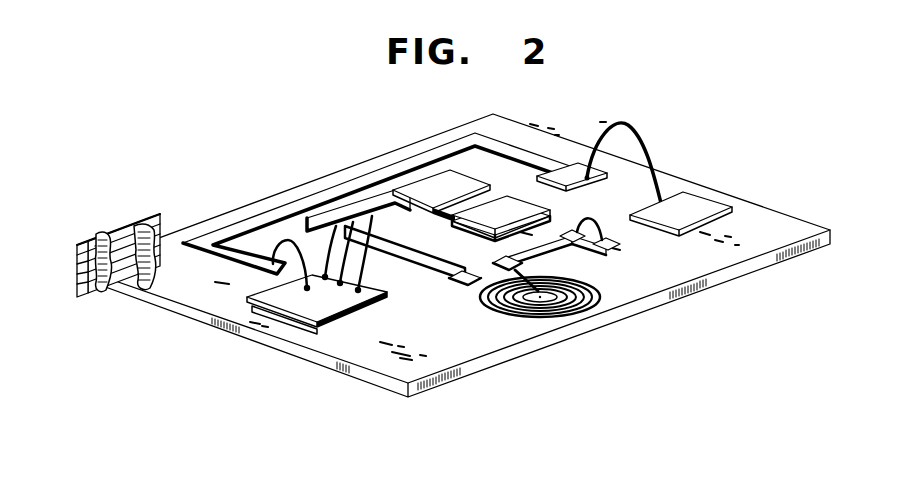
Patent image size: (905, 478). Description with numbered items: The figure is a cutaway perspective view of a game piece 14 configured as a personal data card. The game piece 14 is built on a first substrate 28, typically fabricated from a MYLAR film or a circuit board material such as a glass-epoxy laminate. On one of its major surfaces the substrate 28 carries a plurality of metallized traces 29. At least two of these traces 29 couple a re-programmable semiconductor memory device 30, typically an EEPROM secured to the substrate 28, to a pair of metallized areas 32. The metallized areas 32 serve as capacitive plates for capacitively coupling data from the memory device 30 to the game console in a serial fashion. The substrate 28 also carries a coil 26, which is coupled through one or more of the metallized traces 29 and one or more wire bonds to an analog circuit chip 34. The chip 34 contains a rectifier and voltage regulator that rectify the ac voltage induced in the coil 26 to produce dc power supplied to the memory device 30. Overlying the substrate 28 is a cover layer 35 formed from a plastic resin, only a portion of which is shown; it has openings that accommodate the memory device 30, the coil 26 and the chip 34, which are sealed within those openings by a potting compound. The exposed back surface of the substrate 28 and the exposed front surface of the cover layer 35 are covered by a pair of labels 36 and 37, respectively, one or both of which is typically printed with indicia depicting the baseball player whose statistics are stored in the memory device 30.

The game piece 14 is at (457, 440).
The coil antenna 26 is at (600, 305).
The first substrate 28 is at (740, 270).
The metallized traces 29 is at (277, 207).
The re-programmable semiconductor memory device 30 is at (318, 326).
The metallized areas 32 is at (427, 187).
The analog circuit chip 34 is at (710, 207).
The cover layer 35 is at (148, 238).
The label 36 is at (105, 300).
The label 37 is at (100, 243).